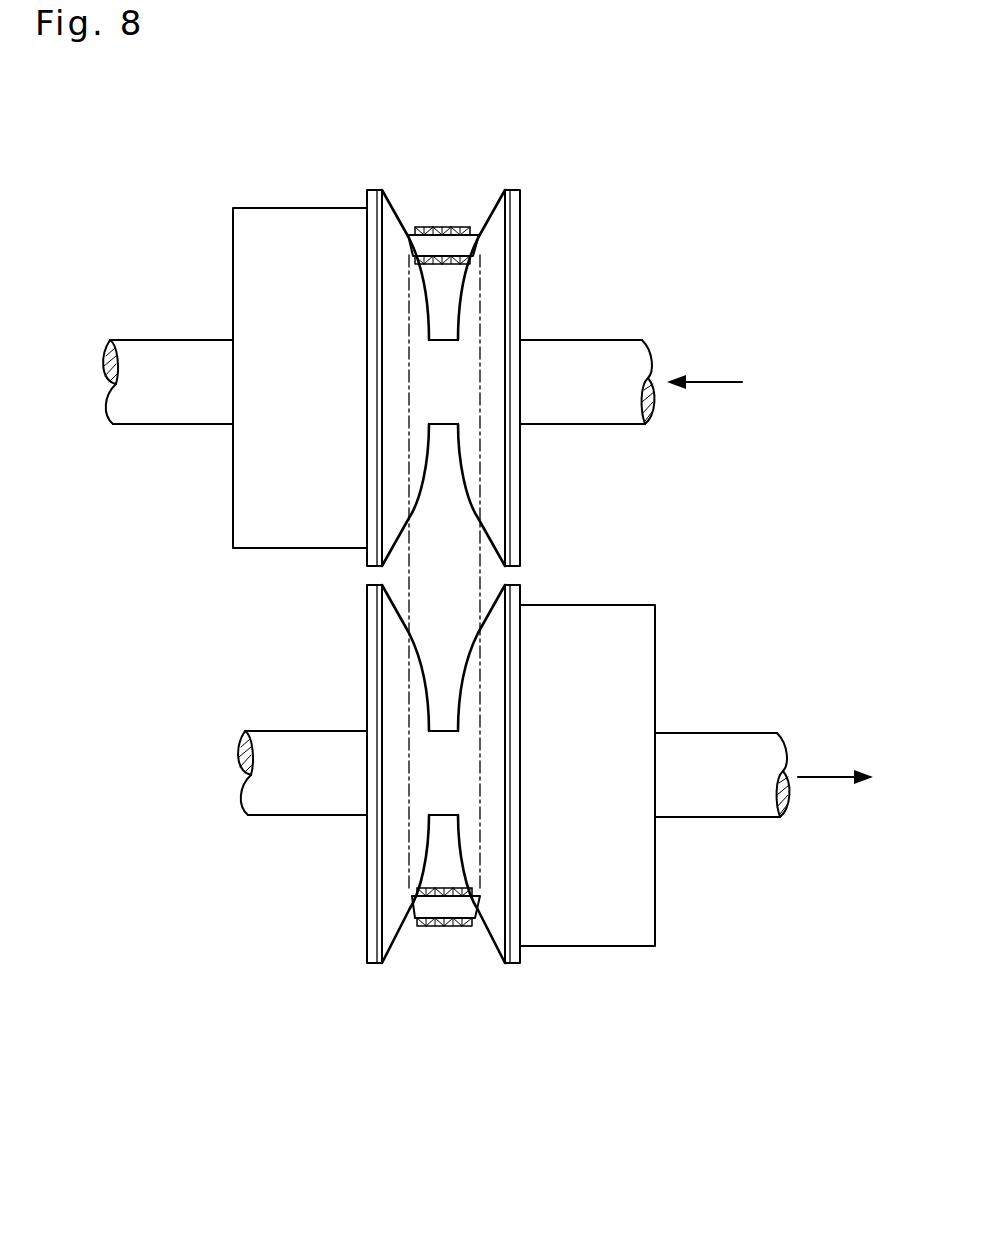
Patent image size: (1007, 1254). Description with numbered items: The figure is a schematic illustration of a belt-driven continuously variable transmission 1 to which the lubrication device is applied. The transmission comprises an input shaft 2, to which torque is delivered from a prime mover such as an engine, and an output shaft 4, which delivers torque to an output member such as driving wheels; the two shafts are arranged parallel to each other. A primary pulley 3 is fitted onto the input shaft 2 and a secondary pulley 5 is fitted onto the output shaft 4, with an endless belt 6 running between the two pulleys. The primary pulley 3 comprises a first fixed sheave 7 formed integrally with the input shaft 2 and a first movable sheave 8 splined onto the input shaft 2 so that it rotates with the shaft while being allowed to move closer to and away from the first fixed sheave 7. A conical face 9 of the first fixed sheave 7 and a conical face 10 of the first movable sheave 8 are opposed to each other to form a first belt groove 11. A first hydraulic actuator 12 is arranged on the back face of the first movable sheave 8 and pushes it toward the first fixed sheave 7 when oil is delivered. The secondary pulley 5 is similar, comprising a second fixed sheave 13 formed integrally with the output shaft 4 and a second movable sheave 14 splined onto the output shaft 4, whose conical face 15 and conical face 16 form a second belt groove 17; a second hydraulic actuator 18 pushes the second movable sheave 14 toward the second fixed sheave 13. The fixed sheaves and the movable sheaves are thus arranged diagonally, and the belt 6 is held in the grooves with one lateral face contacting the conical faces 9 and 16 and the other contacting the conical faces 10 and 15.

The belt-driven continuously variable transmission 1 is at (611, 163).
The input shaft 2 is at (603, 350).
The primary pulley 3 is at (457, 156).
The output shaft 4 is at (722, 748).
The secondary pulley 5 is at (460, 996).
The endless belt 6 is at (443, 246).
The first fixed sheave 7 is at (513, 191).
The first movable sheave 8 is at (373, 191).
The conical face of first fixed sheave 9 is at (490, 228).
The conical face of first movable sheave 10 is at (393, 225).
The first belt groove 11 is at (458, 508).
The first hydraulic actuator 12 is at (306, 222).
The second fixed sheave 13 is at (372, 917).
The second movable sheave 14 is at (520, 967).
The conical face of second fixed sheave 15 is at (397, 908).
The conical face of second movable sheave 16 is at (493, 918).
The second belt groove 17 is at (458, 643).
The second hydraulic actuator 18 is at (610, 942).